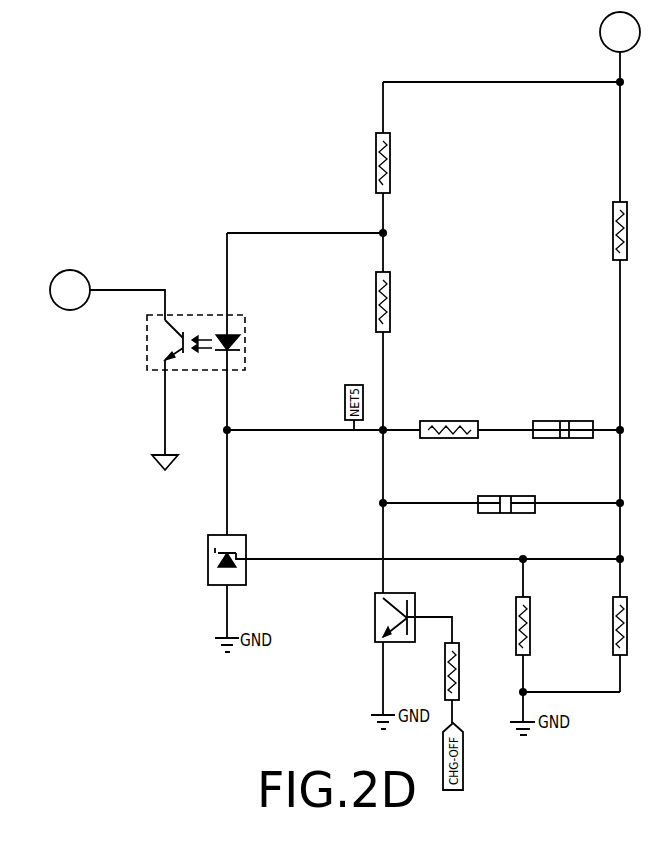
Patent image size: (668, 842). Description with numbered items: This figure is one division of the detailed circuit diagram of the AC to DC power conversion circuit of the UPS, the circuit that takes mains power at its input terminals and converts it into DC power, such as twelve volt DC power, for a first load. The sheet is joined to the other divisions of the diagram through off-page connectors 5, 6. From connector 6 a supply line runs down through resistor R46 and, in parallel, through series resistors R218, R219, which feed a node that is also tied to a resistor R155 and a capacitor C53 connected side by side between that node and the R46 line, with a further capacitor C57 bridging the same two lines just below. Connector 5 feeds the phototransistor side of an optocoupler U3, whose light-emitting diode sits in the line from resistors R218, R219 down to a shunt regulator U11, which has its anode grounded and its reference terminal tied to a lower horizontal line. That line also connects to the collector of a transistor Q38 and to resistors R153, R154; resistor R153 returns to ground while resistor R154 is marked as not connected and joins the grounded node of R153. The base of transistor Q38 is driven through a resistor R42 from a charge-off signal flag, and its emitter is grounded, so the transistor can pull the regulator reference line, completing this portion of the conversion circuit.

The off-page connector 5 is at (70, 290).
The off-page connector 6 is at (620, 32).
The resistor 2K SMF 1206 R218 is at (383, 160).
The resistor 1K SMF 1206 R219 is at (383, 306).
The resistor 20K SMF 0603 R46 is at (621, 231).
The resistor 49.9K SMF 0603 R155 is at (455, 429).
The capacitor 104K SM 0603 C53 is at (545, 428).
The capacitor 221J NPO SM 0603 C57 is at (506, 503).
The optocoupler PS2561L-1 U3 is at (157, 357).
The shunt regulator 431SM U11 is at (238, 565).
The transistor 2222SM Q38 is at (367, 618).
The resistor 20K SMF 0603 R42 is at (455, 669).
The resistor 4.7K SMF 0603 R153 is at (525, 628).
The resistor NC R154 is at (621, 626).